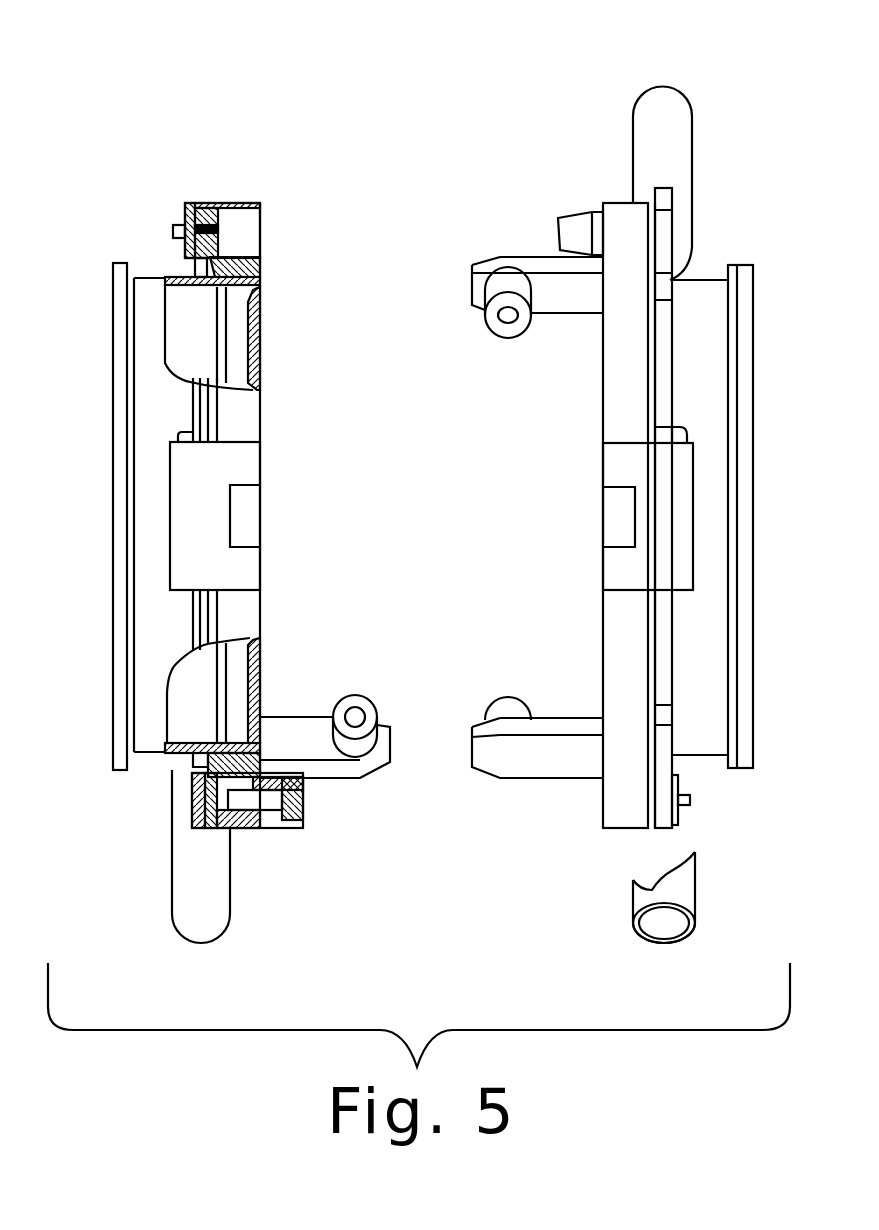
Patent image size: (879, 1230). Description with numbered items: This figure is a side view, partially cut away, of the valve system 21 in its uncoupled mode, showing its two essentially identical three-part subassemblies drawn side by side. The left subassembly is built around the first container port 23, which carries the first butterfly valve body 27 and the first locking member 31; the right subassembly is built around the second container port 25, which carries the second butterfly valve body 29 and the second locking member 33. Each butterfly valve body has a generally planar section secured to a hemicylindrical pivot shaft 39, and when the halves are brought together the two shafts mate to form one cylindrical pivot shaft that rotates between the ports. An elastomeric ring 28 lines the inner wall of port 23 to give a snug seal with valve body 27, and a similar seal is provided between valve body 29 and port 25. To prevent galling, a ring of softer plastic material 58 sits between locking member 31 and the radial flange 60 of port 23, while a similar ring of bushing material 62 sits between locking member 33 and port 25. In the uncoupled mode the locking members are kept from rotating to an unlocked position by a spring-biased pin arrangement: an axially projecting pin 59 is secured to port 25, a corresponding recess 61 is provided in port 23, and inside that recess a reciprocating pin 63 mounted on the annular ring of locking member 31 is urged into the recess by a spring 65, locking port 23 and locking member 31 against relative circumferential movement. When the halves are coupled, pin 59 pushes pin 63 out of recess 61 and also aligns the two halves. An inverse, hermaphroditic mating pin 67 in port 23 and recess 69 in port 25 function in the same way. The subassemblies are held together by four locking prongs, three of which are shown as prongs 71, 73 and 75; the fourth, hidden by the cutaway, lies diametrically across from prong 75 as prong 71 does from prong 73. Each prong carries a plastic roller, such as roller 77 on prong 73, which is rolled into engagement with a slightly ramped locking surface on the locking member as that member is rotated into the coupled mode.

The valve system 21 is at (292, 100).
The first container port 23 is at (148, 377).
The second container port 25 is at (712, 365).
The first butterfly valve body 27 is at (260, 687).
The elastomeric ring 28 is at (257, 327).
The second butterfly valve body 29 is at (600, 637).
The first locking member 31 is at (193, 643).
The second locking member 33 is at (673, 688).
The pivot shaft 39 is at (247, 513).
The ring of softer material 58 is at (203, 823).
The axially projecting pin 59 is at (572, 217).
The radial flange 60 is at (260, 272).
The recess 61 is at (242, 232).
The ring of bushing material 62 is at (652, 733).
The spring biased pin 63 is at (232, 203).
The spring 65 is at (188, 215).
The mating pin 67 is at (283, 820).
The recess 69 is at (537, 558).
The locking prong 71 is at (557, 297).
The locking prong 73 is at (567, 728).
The locking prong 75 is at (307, 724).
The roller 77 is at (500, 710).